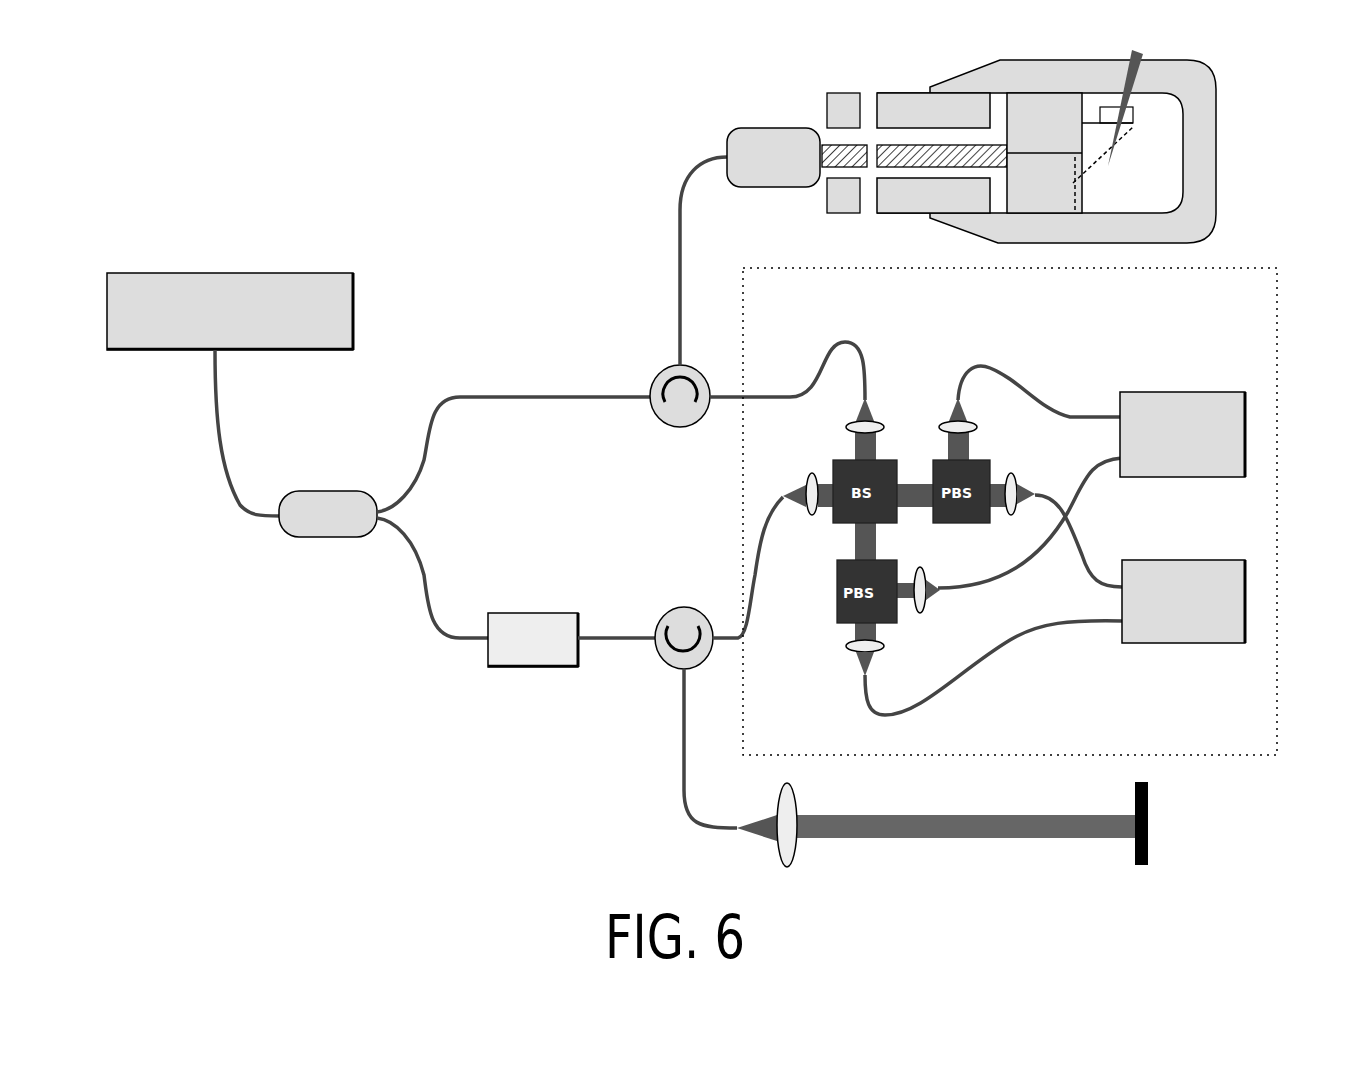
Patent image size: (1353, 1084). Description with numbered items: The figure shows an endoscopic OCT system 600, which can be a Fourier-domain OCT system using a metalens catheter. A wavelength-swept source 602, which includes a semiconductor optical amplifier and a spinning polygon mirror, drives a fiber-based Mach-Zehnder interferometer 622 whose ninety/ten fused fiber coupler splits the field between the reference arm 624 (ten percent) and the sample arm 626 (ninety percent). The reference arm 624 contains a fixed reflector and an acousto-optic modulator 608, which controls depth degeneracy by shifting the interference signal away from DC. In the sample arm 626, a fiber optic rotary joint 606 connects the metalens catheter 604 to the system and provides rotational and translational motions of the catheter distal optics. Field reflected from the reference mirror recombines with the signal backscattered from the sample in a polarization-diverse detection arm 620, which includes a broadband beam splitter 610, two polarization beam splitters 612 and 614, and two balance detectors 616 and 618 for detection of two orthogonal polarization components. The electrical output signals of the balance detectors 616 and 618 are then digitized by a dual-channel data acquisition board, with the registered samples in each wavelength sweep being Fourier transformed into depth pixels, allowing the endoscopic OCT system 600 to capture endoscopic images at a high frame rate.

The endoscopic OCT system 600 is at (563, 67).
The swept-source 602 is at (230, 374).
The metalens catheter 604 is at (1128, 128).
The fiber optic rotary joint 606 is at (773, 137).
The acousto-optic modulator 608 is at (571, 617).
The broadband beam splitter 610 is at (886, 426).
The polarization beam splitter 612 is at (984, 668).
The polarization beam splitter 614 is at (1029, 406).
The balance detector 616 is at (1208, 434).
The balance detector 618 is at (1209, 601).
The polarization-diverse detection arm 620 is at (1010, 511).
The fiber-based Mach-Zehnder interferometer 622 is at (328, 492).
The reference arm 624 is at (432, 578).
The sample arm 626 is at (513, 454).